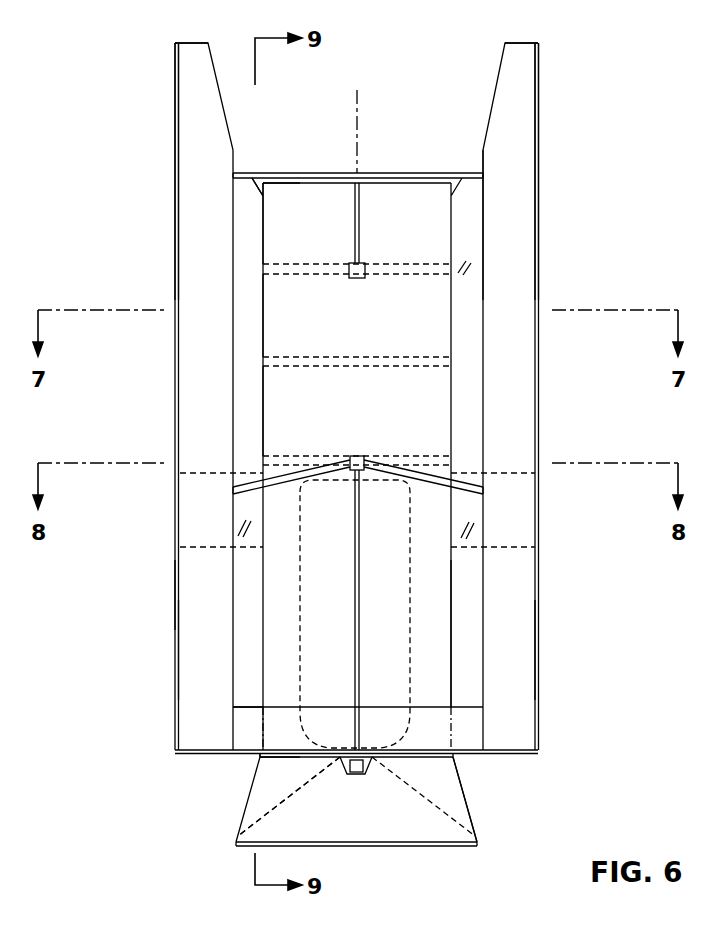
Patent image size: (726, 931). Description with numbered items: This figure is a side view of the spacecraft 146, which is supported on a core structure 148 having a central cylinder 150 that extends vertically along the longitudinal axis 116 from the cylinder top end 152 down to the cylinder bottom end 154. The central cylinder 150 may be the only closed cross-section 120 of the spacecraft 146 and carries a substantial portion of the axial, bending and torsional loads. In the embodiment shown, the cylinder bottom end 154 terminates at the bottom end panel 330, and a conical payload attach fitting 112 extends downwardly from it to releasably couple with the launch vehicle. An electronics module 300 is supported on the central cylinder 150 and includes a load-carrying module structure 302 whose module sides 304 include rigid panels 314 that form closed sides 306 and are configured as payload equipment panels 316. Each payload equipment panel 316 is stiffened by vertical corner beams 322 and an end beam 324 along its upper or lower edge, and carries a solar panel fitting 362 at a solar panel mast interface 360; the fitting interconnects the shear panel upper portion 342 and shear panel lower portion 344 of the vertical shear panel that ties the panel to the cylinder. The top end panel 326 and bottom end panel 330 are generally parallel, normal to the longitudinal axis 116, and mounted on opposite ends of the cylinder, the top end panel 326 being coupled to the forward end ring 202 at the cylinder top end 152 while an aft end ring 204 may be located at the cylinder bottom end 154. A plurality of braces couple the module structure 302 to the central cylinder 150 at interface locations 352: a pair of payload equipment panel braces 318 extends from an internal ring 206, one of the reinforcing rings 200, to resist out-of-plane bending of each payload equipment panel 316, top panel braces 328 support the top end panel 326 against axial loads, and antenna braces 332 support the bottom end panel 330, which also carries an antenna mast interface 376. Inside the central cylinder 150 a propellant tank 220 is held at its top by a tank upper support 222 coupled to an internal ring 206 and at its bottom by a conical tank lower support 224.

The payload attach fitting 112 is at (470, 812).
The longitudinal axis 116 is at (357, 100).
The closed cross-section 120 is at (297, 405).
The spacecraft 146 is at (177, 90).
The core structure 148 is at (293, 345).
The central cylinder 150 is at (278, 247).
The cylinder top end 152 is at (262, 190).
The cylinder bottom end 154 is at (277, 757).
The reinforcing rings 200 is at (427, 265).
The forward end ring 202 is at (278, 178).
The aft end ring 204 is at (453, 757).
The internal ring 206 is at (423, 357).
The propellant tank 220 is at (410, 577).
The tank upper support 222 is at (427, 455).
The conical tank lower support 224 is at (280, 807).
The electronics module 300 is at (538, 85).
The module structure 302 is at (538, 118).
The module sides 304 is at (538, 160).
The closed sides 306 is at (177, 178).
The rigid panels 314 is at (177, 600).
The payload equipment panels 316 is at (177, 640).
The payload equipment panel braces 318 is at (287, 475).
The corner beams 322 is at (190, 675).
The end beam 324 is at (193, 43).
The top end panel 326 is at (420, 173).
The top panel braces 328 is at (355, 190).
The bottom end panel 330 is at (462, 750).
The antenna braces 332 is at (360, 667).
The shear panel upper portion 342 is at (467, 270).
The shear panel lower portion 344 is at (468, 613).
The interface locations 352 is at (367, 280).
The solar panel mast interface 360 is at (550, 510).
The solar panel fitting 362 is at (243, 527).
The antenna mast interface 376 is at (368, 774).